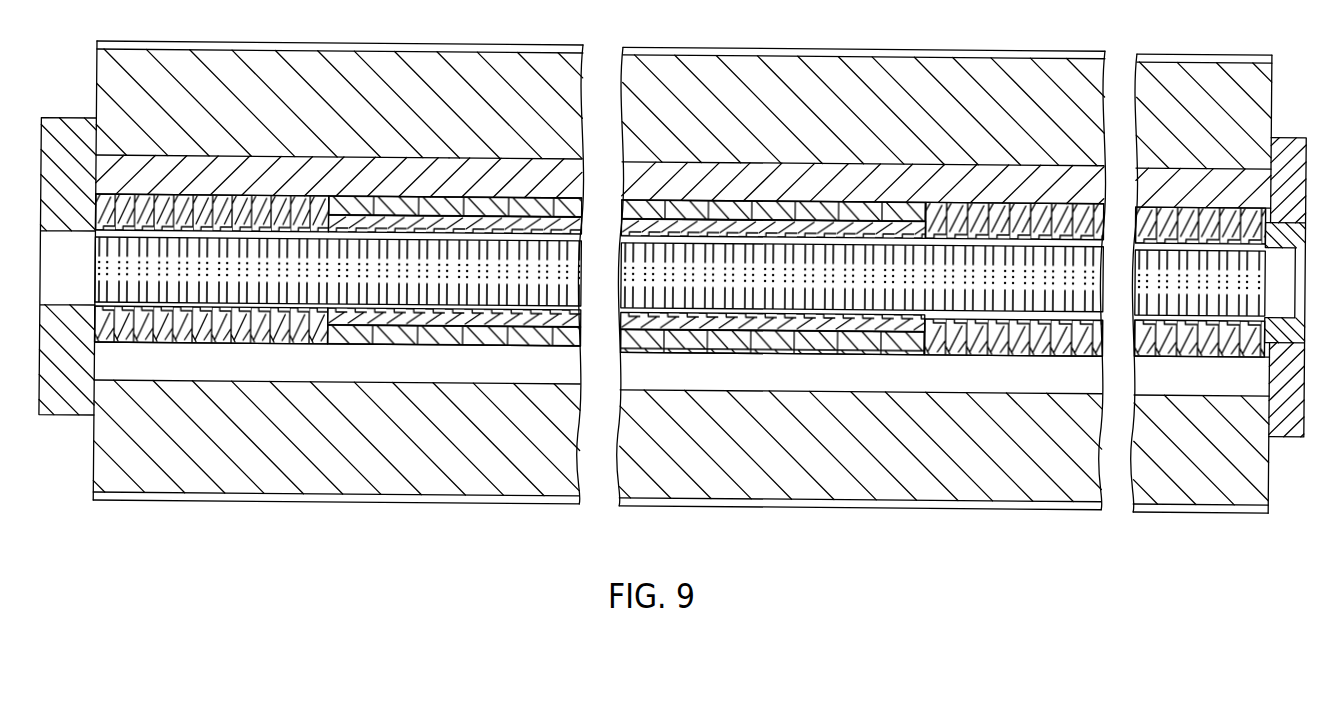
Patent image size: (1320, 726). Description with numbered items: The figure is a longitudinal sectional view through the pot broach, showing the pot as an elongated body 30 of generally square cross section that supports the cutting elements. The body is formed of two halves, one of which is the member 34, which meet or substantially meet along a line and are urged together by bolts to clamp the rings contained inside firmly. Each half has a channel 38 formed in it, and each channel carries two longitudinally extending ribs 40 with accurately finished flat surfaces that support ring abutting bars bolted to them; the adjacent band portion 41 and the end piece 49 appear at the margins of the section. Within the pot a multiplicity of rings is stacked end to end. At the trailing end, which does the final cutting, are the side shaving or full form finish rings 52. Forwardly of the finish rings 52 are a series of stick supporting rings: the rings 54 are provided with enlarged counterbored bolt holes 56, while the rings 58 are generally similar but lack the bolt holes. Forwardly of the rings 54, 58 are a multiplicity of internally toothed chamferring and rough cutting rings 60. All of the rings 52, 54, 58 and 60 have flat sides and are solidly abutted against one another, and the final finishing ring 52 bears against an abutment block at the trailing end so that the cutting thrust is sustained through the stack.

The elongated body 30 is at (283, 6).
The half of the body 34 is at (398, 496).
The channel 38 is at (352, 373).
The longitudinally extending rib 40 is at (190, 155).
The intermediate band portion 41 is at (522, 159).
The left end cap 49 is at (68, 250).
The side shaving or full form finish ring 52 is at (270, 205).
The stick supporting ring 54 is at (358, 203).
The enlarged counterbored bolt hole 56 is at (403, 211).
The stick supporting ring 58 is at (752, 207).
The internally toothed chamferring and rough cutting ring 60 is at (1203, 209).